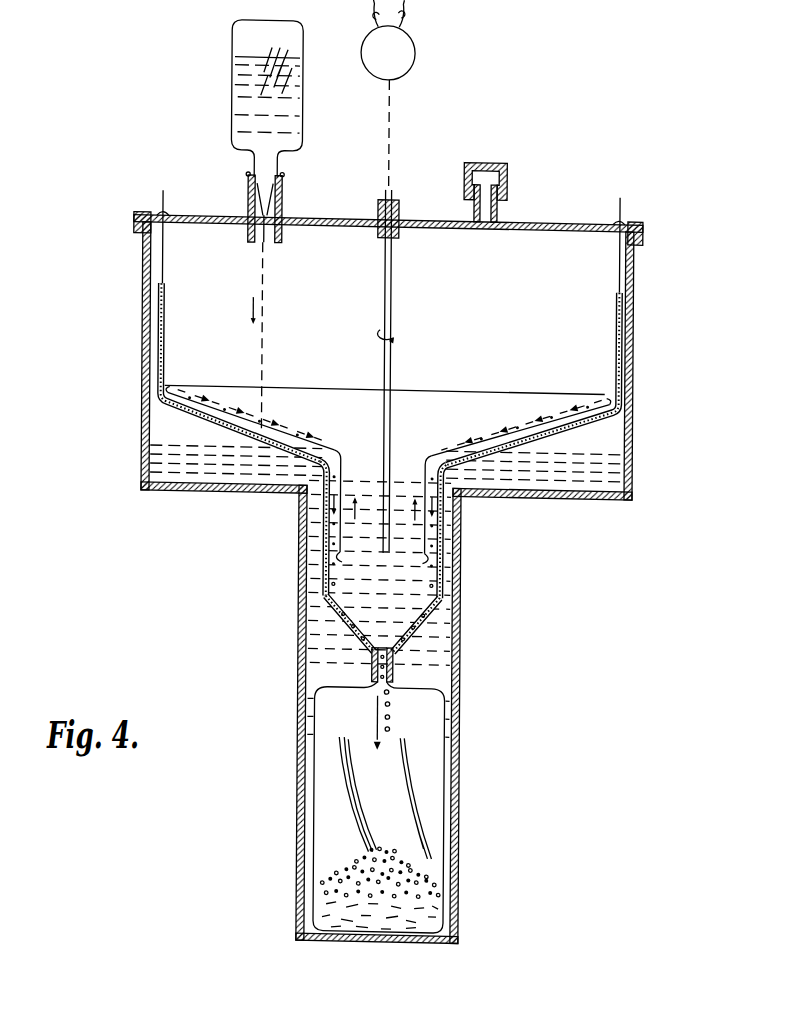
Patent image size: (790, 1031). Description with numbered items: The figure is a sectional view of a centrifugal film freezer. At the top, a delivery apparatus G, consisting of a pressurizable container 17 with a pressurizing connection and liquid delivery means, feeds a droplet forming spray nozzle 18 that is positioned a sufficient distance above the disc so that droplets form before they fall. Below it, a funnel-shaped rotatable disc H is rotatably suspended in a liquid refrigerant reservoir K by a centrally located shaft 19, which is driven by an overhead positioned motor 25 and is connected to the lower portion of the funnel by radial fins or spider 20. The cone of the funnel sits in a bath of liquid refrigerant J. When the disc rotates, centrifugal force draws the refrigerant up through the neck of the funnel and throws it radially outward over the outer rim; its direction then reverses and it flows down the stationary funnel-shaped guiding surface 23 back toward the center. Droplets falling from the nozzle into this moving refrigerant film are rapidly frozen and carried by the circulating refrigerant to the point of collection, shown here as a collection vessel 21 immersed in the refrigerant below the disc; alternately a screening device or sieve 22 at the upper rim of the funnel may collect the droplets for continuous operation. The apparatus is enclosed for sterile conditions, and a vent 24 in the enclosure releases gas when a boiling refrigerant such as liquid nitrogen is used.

The delivery apparatus G is at (222, 36).
The pressurizable container 17 is at (234, 110).
The droplet forming spray nozzle 18 is at (264, 192).
The centrally located shaft 19 is at (377, 283).
The radial fins or spider 20 is at (357, 487).
The collection vessel 21 is at (338, 784).
The screening device or sieve 22 is at (331, 599).
The stationary funnel-shaped guiding surface 23 is at (195, 411).
The vent 24 is at (494, 171).
The motor 25 is at (403, 50).
The funnel-shaped rotatable disc H is at (317, 411).
The bath of liquid refrigerant J is at (335, 644).
The liquid refrigerant reservoir K is at (627, 466).